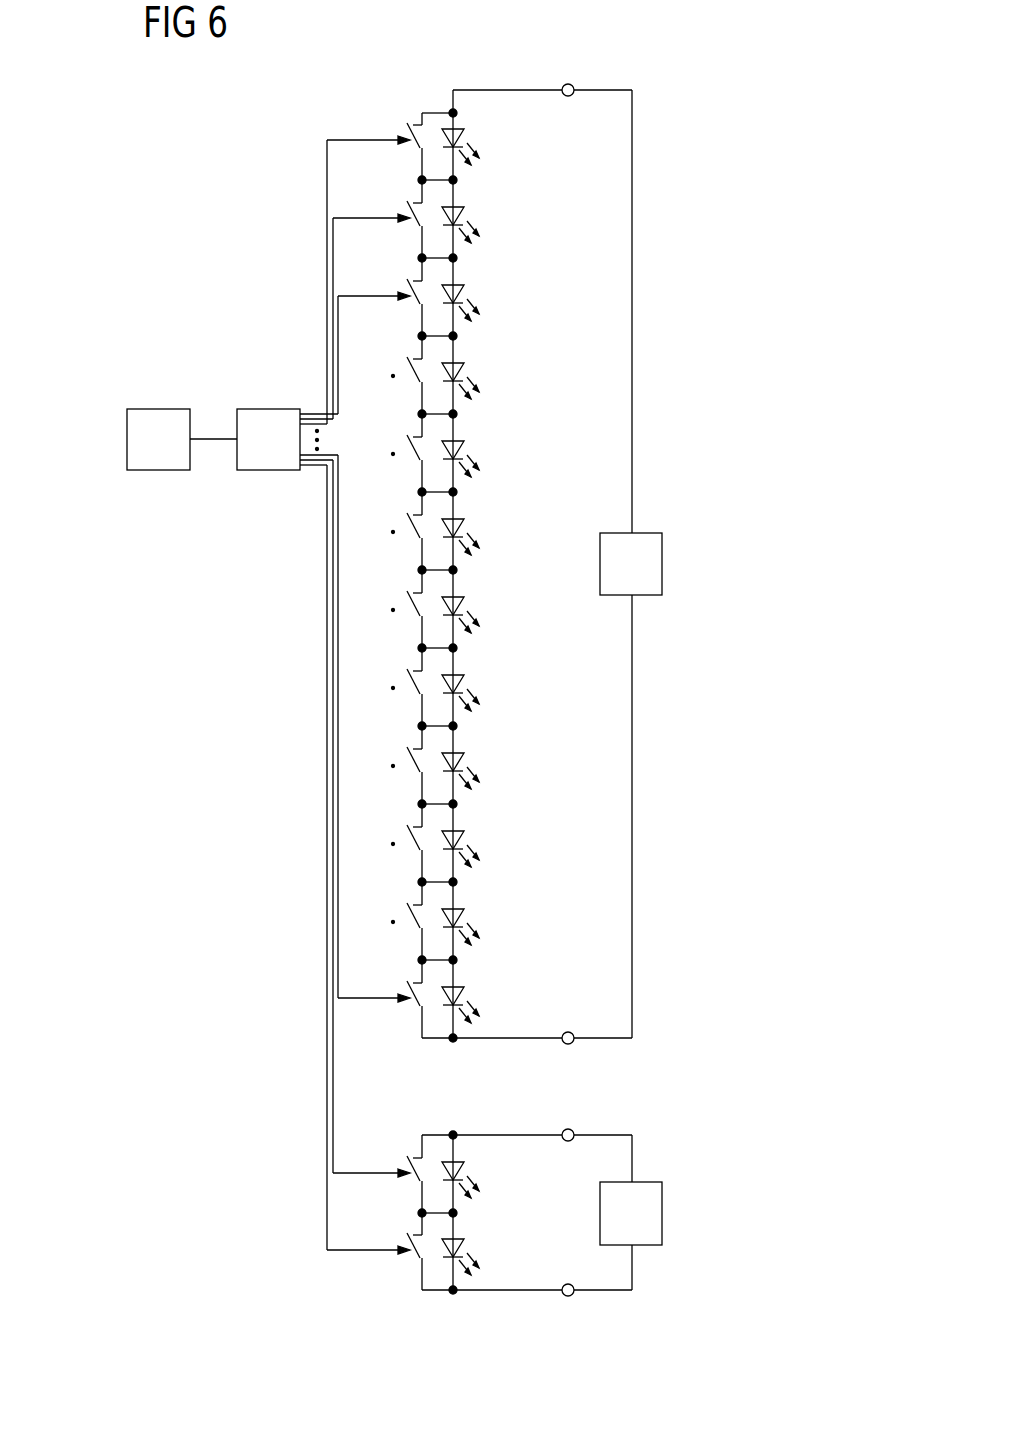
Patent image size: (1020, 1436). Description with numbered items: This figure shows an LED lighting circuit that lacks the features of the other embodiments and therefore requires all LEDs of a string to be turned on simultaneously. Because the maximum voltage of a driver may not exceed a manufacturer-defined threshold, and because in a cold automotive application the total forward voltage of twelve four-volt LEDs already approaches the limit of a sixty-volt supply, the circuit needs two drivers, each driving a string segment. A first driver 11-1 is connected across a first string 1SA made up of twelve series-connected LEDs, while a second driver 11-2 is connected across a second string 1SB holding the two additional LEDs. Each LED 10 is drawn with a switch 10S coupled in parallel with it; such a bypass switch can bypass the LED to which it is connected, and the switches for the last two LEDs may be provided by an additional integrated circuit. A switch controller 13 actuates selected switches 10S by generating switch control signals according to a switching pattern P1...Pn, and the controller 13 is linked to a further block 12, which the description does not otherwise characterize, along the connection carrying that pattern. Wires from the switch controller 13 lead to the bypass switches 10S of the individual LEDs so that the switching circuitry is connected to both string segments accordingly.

The first string 1SA is at (428, 98).
The second string 1SB is at (436, 1124).
The LED 10 is at (462, 130).
The switch 10S is at (407, 127).
The first driver 11-1 is at (662, 563).
The second driver 11-2 is at (662, 1213).
The control unit 12 is at (157, 409).
The switch controller 13 is at (267, 409).
The switching pattern P1...Pn is at (212, 441).